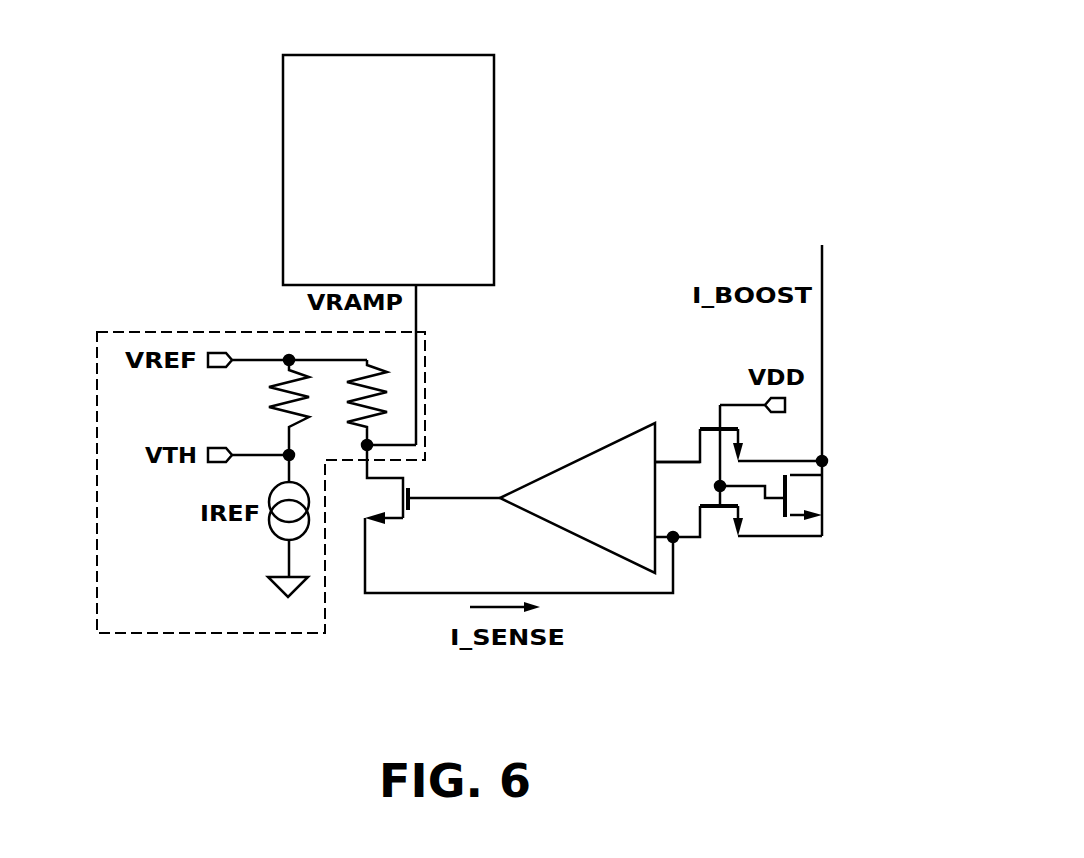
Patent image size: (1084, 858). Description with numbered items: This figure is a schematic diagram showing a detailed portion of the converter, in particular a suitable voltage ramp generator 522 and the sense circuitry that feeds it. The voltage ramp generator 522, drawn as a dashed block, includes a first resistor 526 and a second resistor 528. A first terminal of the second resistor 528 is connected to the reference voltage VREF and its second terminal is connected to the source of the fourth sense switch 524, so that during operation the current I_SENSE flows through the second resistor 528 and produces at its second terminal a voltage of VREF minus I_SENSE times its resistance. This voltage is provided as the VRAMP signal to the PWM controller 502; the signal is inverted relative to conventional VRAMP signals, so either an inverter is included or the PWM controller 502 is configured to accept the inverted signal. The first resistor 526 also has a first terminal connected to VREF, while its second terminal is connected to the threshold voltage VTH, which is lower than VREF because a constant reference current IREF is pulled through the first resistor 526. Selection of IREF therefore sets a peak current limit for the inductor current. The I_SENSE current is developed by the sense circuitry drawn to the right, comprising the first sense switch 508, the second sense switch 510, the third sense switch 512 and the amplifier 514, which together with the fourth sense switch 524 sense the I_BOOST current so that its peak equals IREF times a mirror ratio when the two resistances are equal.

The PWM controller 502 is at (362, 227).
The first sense switch 508 is at (828, 500).
The second sense switch 510 is at (702, 417).
The third sense switch 512 is at (728, 555).
The amplifier 514 is at (595, 547).
The voltage ramp generator 522 is at (267, 633).
The fourth sense switch 524 is at (378, 528).
The first resistor 526 is at (262, 393).
The second resistor 528 is at (407, 392).